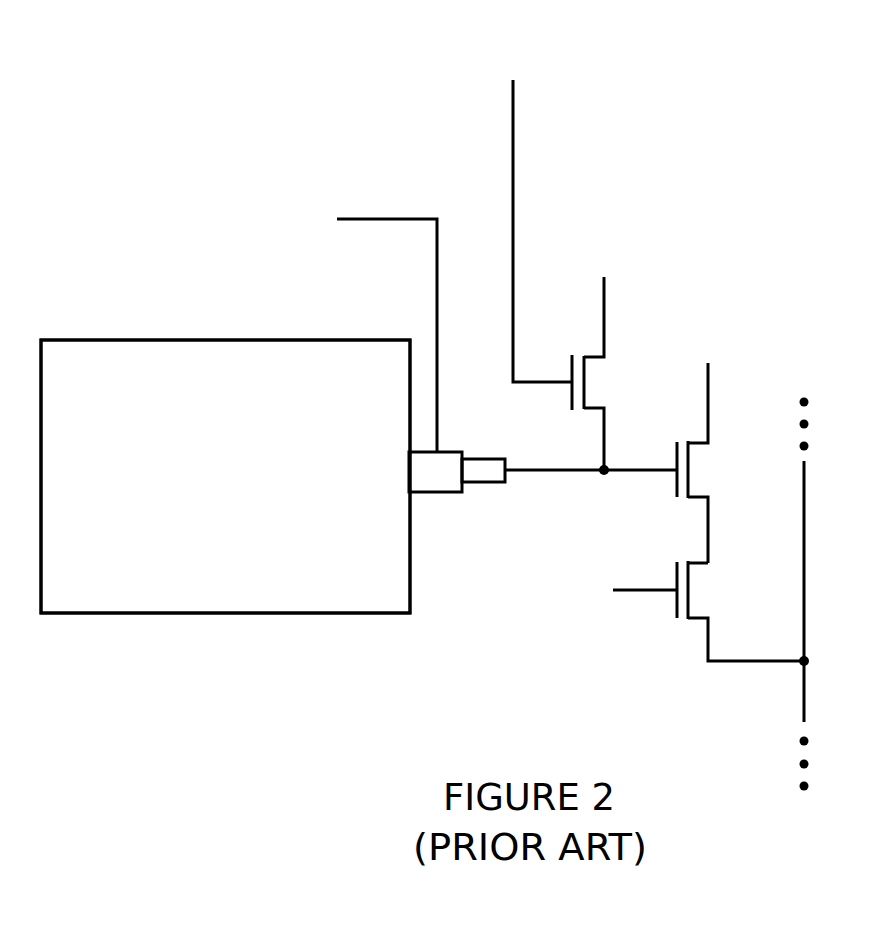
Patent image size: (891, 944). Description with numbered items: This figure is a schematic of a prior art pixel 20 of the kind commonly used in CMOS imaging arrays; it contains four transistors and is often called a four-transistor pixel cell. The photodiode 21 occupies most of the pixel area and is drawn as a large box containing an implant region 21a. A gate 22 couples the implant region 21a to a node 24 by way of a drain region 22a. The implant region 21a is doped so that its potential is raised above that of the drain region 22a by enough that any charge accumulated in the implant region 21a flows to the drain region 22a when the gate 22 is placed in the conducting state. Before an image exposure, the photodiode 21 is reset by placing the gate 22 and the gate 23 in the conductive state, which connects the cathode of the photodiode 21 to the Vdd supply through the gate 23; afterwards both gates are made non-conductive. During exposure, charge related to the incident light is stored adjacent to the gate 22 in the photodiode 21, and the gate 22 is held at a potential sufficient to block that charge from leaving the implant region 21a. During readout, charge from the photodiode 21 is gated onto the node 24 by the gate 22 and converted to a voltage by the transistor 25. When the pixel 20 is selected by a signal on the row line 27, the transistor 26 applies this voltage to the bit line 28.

The pixel 20 is at (186, 67).
The photodiode 21 is at (162, 613).
The implant region 21a is at (225, 498).
The gate 22 is at (433, 486).
The drain region 22a is at (484, 470).
The gate 23 is at (568, 365).
The node 24 is at (602, 472).
The transistor 25 is at (697, 495).
The transistor 26 is at (700, 617).
The row line 27 is at (634, 592).
The bit line 28 is at (806, 510).